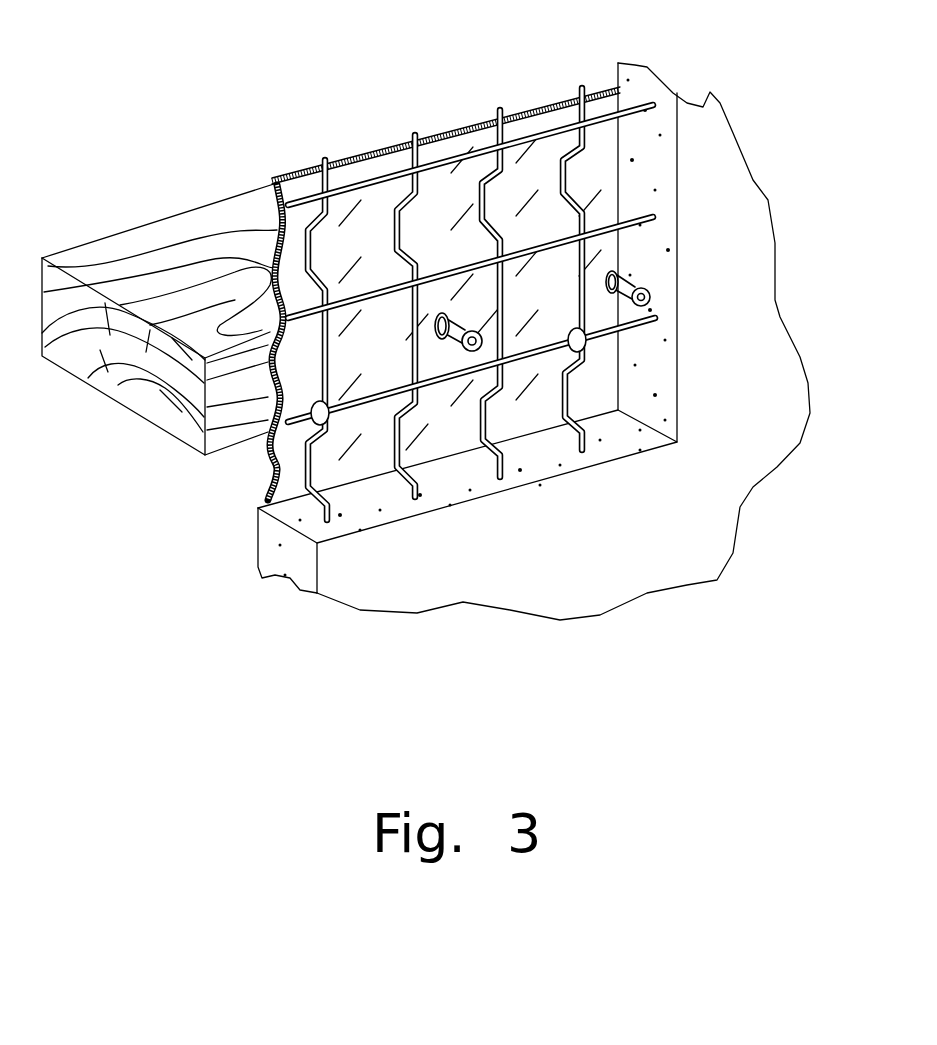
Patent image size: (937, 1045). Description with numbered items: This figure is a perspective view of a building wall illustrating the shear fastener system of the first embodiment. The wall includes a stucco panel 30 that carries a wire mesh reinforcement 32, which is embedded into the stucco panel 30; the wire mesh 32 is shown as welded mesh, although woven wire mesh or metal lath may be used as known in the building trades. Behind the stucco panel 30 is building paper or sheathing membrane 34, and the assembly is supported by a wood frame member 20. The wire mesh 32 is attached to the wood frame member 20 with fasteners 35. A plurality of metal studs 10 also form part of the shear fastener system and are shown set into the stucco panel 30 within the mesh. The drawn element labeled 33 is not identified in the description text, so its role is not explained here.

The metal stud 10 is at (625, 283).
The wood frame member 20 is at (157, 240).
The stucco panel 30 is at (653, 562).
The wire mesh reinforcement 32 is at (582, 88).
The mesh panel 33 is at (457, 158).
The building paper 34 is at (382, 168).
The fastener 35 is at (305, 430).